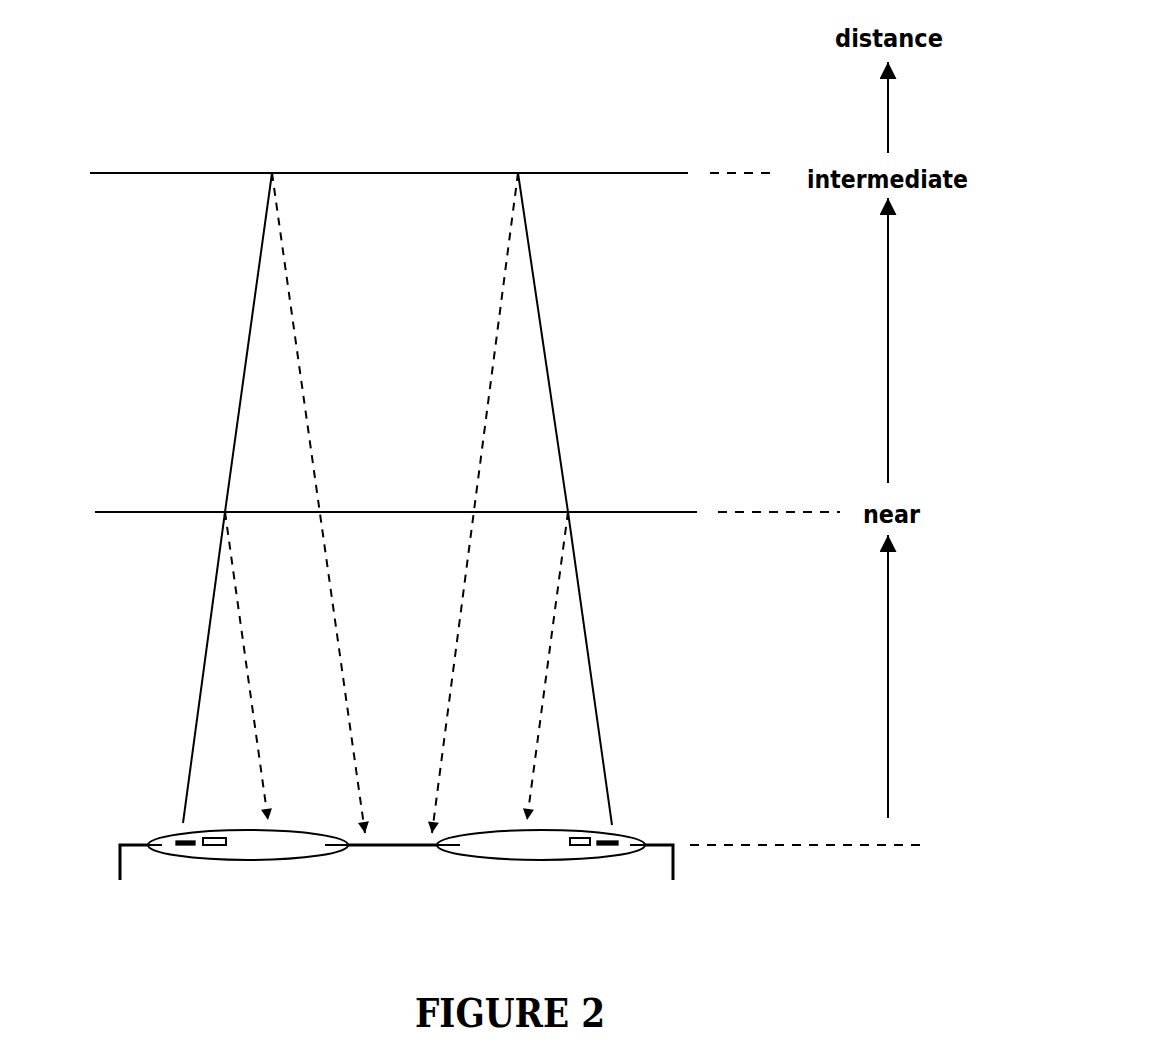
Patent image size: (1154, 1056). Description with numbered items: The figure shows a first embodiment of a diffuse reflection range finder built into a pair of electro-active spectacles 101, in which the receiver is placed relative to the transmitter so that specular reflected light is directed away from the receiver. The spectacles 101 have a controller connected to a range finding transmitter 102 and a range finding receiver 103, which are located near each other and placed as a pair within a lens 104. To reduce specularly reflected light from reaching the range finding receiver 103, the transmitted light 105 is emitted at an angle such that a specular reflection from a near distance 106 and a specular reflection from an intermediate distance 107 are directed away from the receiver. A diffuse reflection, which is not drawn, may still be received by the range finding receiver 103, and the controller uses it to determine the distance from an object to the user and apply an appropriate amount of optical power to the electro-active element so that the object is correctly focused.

The electro-active spectacles 101 is at (397, 845).
The range finding transmitter 102 is at (182, 846).
The range finding receiver 103 is at (213, 846).
The lens 104 is at (480, 847).
The transmitted light 105 is at (245, 362).
The specular reflection from a near distance 106 is at (248, 665).
The specular reflection from an intermediate distance 107 is at (302, 387).